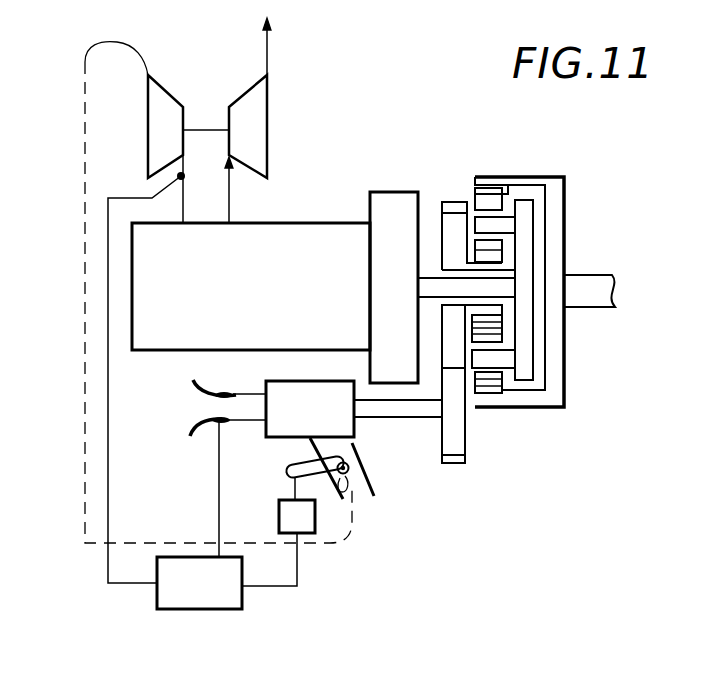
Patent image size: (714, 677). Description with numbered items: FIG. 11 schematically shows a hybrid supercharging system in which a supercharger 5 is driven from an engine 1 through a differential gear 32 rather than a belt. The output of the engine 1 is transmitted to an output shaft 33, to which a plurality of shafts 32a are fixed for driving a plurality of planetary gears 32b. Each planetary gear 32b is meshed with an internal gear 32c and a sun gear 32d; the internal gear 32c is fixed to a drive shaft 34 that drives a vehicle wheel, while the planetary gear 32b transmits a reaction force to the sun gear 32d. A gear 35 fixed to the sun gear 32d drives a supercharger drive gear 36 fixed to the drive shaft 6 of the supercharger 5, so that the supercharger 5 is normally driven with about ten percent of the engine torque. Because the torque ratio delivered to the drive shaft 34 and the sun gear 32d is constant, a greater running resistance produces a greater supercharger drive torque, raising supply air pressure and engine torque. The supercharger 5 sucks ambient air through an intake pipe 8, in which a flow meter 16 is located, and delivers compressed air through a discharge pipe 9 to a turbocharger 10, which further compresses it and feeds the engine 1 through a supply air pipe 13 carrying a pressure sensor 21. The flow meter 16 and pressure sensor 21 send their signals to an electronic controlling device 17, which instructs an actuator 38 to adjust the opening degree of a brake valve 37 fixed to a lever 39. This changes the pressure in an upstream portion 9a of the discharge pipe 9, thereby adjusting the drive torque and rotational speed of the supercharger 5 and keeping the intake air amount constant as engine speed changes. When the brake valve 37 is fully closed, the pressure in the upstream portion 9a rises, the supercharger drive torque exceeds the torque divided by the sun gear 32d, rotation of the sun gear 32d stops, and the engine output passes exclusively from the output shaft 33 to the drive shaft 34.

The engine 1 is at (350, 229).
The supercharger 5 is at (356, 424).
The drive shaft 6 is at (423, 418).
The intake pipe 8 is at (238, 393).
The discharge pipe 9 is at (362, 492).
The upstream portion of the discharge pipe 9a is at (347, 446).
The turbocharger 10 is at (245, 57).
The supply air pipe 13 is at (183, 205).
The flow meter 16 is at (217, 417).
The electronic controlling device 17 is at (157, 597).
The pressure sensor 21 is at (181, 176).
The differential gear 32 is at (522, 147).
The shafts 32a is at (500, 227).
The planetary gears 32b is at (495, 250).
The internal gear 32c is at (505, 393).
The sun gear 32d is at (492, 315).
The output shaft 33 is at (492, 292).
The drive shaft 34 is at (590, 276).
The gear 35 is at (447, 340).
The supercharger drive gear 36 is at (465, 455).
The brake valve 37 is at (317, 470).
The actuator 38 is at (305, 533).
The lever 39 is at (315, 475).